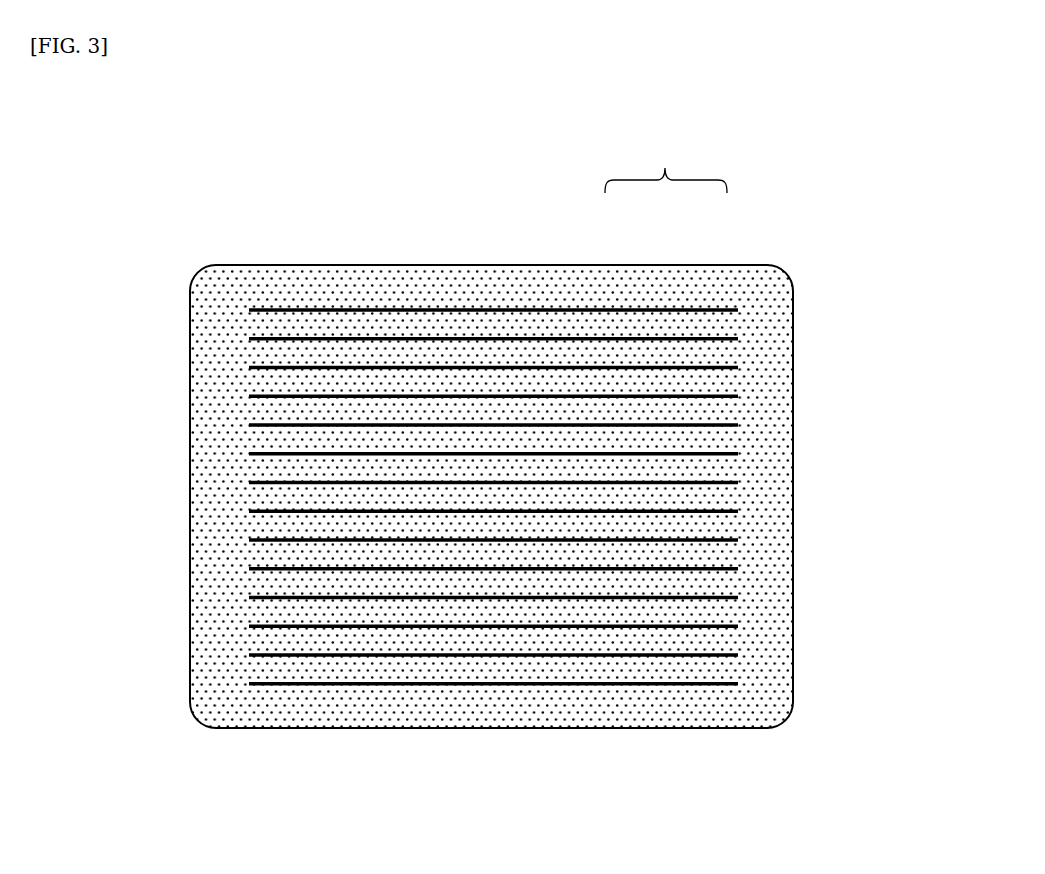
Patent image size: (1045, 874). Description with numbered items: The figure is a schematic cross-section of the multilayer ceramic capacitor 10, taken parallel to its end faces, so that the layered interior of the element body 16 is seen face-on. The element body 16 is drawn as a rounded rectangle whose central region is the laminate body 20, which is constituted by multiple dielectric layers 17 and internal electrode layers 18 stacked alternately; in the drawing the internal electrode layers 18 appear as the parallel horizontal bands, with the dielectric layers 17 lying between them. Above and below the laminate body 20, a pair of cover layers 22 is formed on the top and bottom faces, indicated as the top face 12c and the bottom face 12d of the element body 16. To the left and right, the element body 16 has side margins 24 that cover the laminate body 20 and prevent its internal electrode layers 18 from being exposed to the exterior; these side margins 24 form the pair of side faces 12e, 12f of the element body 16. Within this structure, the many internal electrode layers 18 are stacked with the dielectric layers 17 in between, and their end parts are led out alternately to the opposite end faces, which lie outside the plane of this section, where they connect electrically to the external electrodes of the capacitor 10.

The multilayer ceramic capacitor 10 is at (772, 207).
The top face 12c is at (448, 266).
The bottom face 12d is at (463, 727).
The side face 12e is at (190, 452).
The side face 12f is at (792, 452).
The element body 16 is at (493, 380).
The dielectric layers 17 is at (520, 387).
The internal electrode layers 18 is at (607, 367).
The laminate body 20 is at (666, 165).
The cover layers 22 is at (510, 279).
The side margins 24 is at (217, 390).